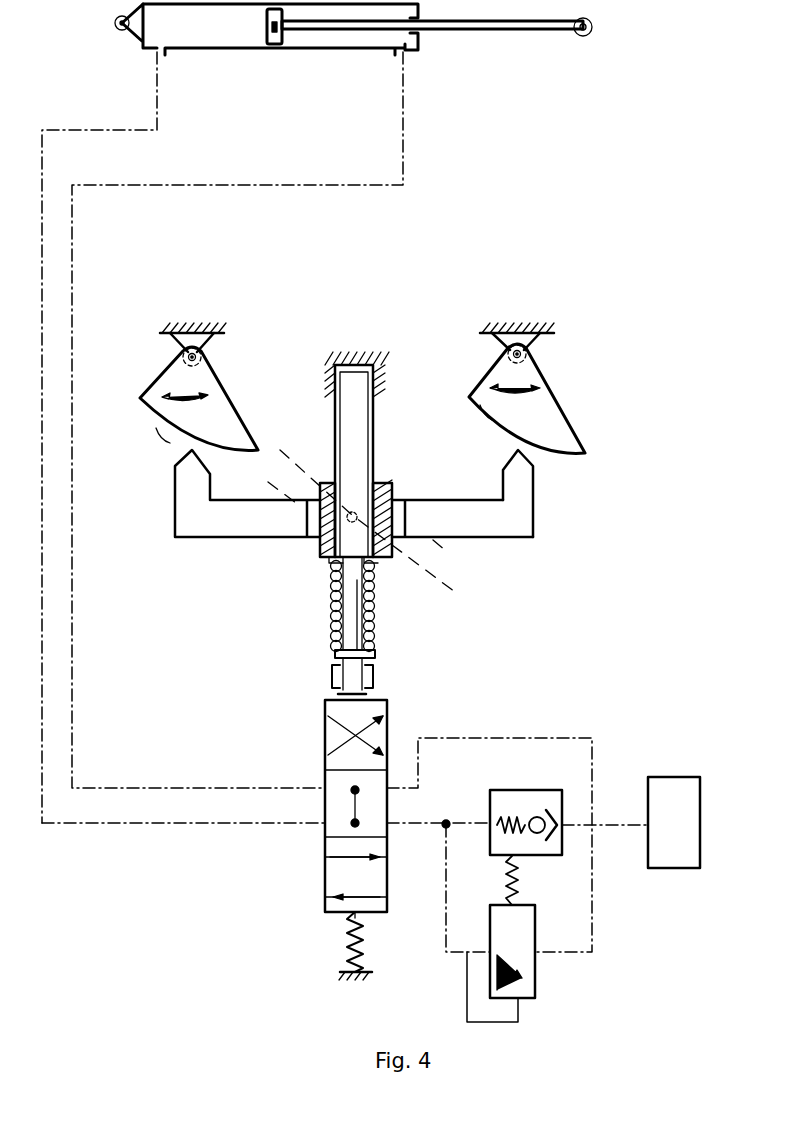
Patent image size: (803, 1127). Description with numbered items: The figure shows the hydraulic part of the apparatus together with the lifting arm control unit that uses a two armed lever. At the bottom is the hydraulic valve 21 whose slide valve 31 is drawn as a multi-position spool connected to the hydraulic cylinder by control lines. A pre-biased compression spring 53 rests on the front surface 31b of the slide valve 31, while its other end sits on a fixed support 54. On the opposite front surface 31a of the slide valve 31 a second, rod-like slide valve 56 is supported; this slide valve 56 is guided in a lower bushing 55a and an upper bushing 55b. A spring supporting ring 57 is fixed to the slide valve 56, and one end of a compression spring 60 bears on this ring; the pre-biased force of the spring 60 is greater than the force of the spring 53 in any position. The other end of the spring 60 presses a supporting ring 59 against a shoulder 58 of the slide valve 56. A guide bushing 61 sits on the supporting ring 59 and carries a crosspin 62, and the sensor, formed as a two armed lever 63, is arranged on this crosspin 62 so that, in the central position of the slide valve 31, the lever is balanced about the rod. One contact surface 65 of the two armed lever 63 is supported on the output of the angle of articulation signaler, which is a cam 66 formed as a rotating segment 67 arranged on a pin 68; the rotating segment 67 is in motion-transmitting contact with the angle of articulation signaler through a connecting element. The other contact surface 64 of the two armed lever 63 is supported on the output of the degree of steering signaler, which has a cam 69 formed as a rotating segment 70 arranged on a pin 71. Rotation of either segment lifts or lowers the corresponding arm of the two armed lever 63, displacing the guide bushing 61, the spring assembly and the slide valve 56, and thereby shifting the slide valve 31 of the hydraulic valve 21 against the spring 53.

The hydraulic valve 21 is at (325, 800).
The slide valve 31 is at (330, 705).
The front surface of the slide valve 31a is at (368, 694).
The front surface of the slide valve 31b is at (350, 917).
The compression spring 53 is at (365, 936).
The fixed support 54 is at (355, 978).
The bushing 55a is at (332, 676).
The bushing 55b is at (380, 388).
The slide valve 56 is at (372, 449).
The spring supporting ring 57 is at (375, 654).
The shoulder 58 is at (395, 557).
The supporting ring 59 is at (325, 556).
The compression spring 60 is at (330, 600).
The guide bushing 61 is at (345, 500).
The crosspin 62 is at (308, 478).
The two armed lever 63 is at (522, 516).
The contact surface 64 is at (520, 453).
The contact surface 65 is at (185, 463).
The cam 66 is at (160, 427).
The rotating segment 67 is at (212, 380).
The pin 68 is at (192, 350).
The cam 69 is at (487, 417).
The rotating segment 70 is at (540, 385).
The pin 71 is at (517, 350).